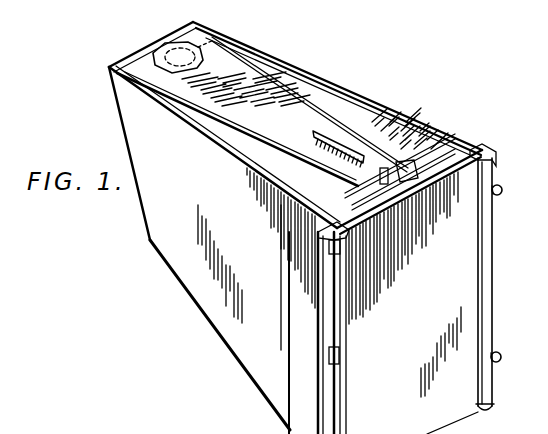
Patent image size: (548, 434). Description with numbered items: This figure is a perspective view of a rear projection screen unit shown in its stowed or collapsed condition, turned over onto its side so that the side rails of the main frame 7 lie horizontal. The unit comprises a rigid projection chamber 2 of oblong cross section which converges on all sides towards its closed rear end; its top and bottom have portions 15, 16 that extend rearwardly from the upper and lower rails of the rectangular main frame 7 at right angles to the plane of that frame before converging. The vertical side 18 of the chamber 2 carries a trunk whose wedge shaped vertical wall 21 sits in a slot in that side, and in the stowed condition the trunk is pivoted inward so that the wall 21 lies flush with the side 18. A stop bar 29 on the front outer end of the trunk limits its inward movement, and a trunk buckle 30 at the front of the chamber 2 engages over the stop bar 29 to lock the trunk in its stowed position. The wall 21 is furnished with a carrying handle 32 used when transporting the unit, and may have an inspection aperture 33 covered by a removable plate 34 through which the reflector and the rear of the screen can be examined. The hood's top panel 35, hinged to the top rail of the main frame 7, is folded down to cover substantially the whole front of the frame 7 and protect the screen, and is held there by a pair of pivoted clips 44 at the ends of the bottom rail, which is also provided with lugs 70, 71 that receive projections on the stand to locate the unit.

The projection chamber 2 is at (226, 344).
The main frame 7 is at (481, 150).
The top portion 15 is at (305, 417).
The bottom portion 16 is at (447, 135).
The vertical side 18 is at (268, 180).
The vertical wall 21 is at (283, 90).
The stop bar 29 is at (345, 184).
The trunk buckle 30 is at (408, 200).
The carrying handle 32 is at (345, 142).
The inspection aperture 33 is at (208, 57).
The removable plate 34 is at (254, 53).
The top panel 35 is at (420, 284).
The pivoted clips 44 is at (484, 160).
The lug 70 is at (499, 362).
The lug 71 is at (498, 196).